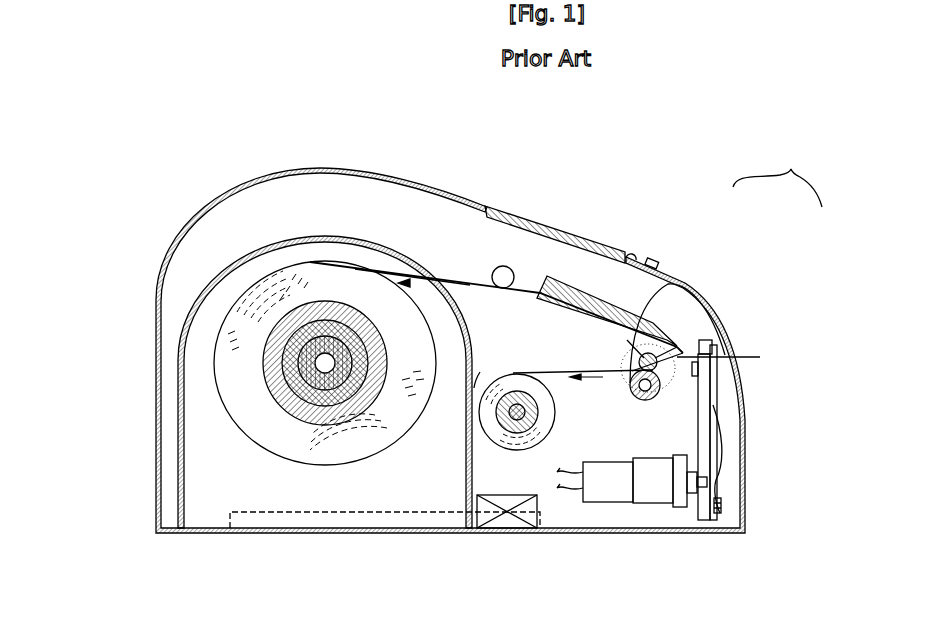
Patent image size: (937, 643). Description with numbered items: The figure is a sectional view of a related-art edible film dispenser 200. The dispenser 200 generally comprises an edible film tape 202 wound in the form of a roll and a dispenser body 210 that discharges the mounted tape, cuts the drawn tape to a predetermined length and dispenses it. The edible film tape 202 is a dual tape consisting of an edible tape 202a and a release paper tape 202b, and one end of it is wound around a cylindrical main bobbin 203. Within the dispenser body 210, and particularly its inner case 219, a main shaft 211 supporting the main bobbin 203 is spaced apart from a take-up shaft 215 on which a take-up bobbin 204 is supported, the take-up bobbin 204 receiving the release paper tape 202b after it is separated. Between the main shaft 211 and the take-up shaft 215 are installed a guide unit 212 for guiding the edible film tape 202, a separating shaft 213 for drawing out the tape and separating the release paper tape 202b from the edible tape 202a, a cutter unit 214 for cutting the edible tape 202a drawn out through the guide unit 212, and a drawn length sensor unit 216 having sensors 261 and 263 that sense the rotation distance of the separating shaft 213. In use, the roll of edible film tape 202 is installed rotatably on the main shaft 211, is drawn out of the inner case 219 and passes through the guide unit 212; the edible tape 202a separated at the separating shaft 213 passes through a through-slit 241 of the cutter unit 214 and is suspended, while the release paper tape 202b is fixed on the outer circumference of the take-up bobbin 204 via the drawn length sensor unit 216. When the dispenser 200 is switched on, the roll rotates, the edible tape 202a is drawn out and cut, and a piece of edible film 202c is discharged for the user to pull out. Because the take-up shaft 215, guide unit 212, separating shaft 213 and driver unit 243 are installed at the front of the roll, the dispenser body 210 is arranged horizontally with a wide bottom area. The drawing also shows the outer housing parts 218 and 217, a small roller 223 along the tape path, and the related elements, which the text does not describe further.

The edible film dispenser 200 is at (306, 132).
The edible film tape 202 is at (288, 440).
The edible tape 202a is at (680, 354).
The release paper tape 202b is at (570, 372).
The piece of edible film 202c is at (760, 357).
The main bobbin 203 is at (273, 367).
The take-up bobbin 204 is at (528, 423).
The dispenser body 210 is at (437, 232).
The main shaft 211 is at (310, 332).
The guide unit 212 is at (607, 282).
The separating shaft 213 is at (708, 387).
The cutter unit 214 is at (728, 457).
The take-up shaft 215 is at (508, 414).
The drawn length sensor unit 216 is at (721, 273).
The bottom frame 217 is at (408, 525).
The housing 218 is at (152, 470).
The inner case 219 is at (322, 238).
The guide roller 223 is at (503, 266).
The through-slit 241 is at (713, 363).
The driver unit 243 is at (648, 503).
The sensor 261 is at (683, 352).
The sensor 263 is at (660, 342).